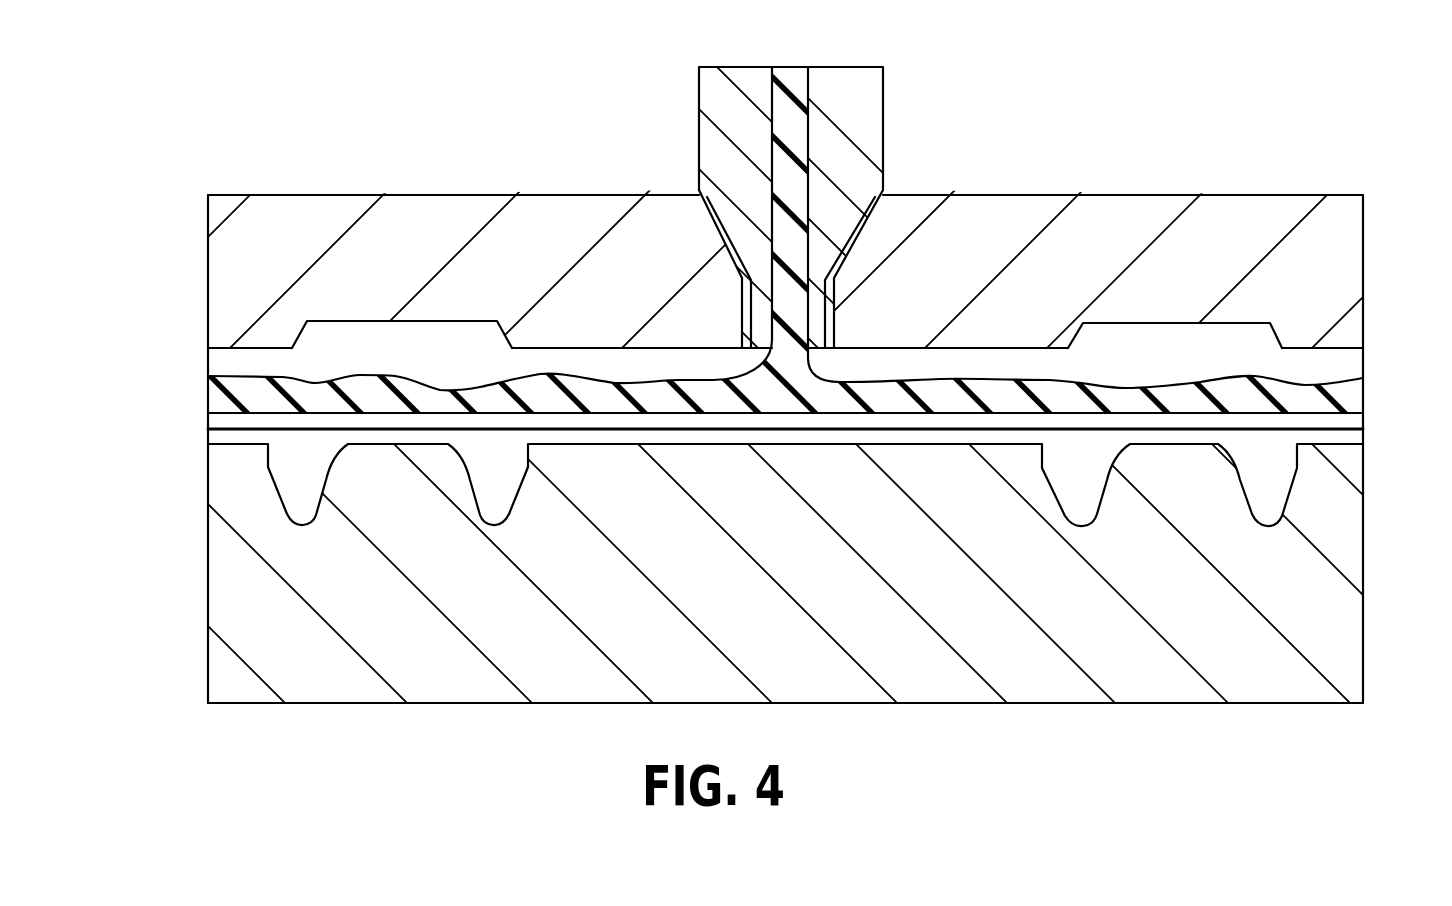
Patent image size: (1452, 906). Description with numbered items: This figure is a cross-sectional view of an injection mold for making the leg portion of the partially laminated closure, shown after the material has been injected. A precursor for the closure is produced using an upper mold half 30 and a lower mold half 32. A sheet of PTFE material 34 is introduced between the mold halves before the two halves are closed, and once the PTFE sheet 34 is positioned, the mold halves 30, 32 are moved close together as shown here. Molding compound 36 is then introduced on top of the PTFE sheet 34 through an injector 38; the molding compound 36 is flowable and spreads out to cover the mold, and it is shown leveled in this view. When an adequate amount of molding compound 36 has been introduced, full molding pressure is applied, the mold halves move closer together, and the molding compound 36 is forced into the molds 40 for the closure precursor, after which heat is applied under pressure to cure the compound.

The upper mold half 30 is at (218, 275).
The lower mold half 32 is at (215, 569).
The sheet of PTFE material 34 is at (222, 429).
The molding compound 36 is at (480, 392).
The injector 38 is at (883, 65).
The molds for the closure precursor 40 is at (358, 328).